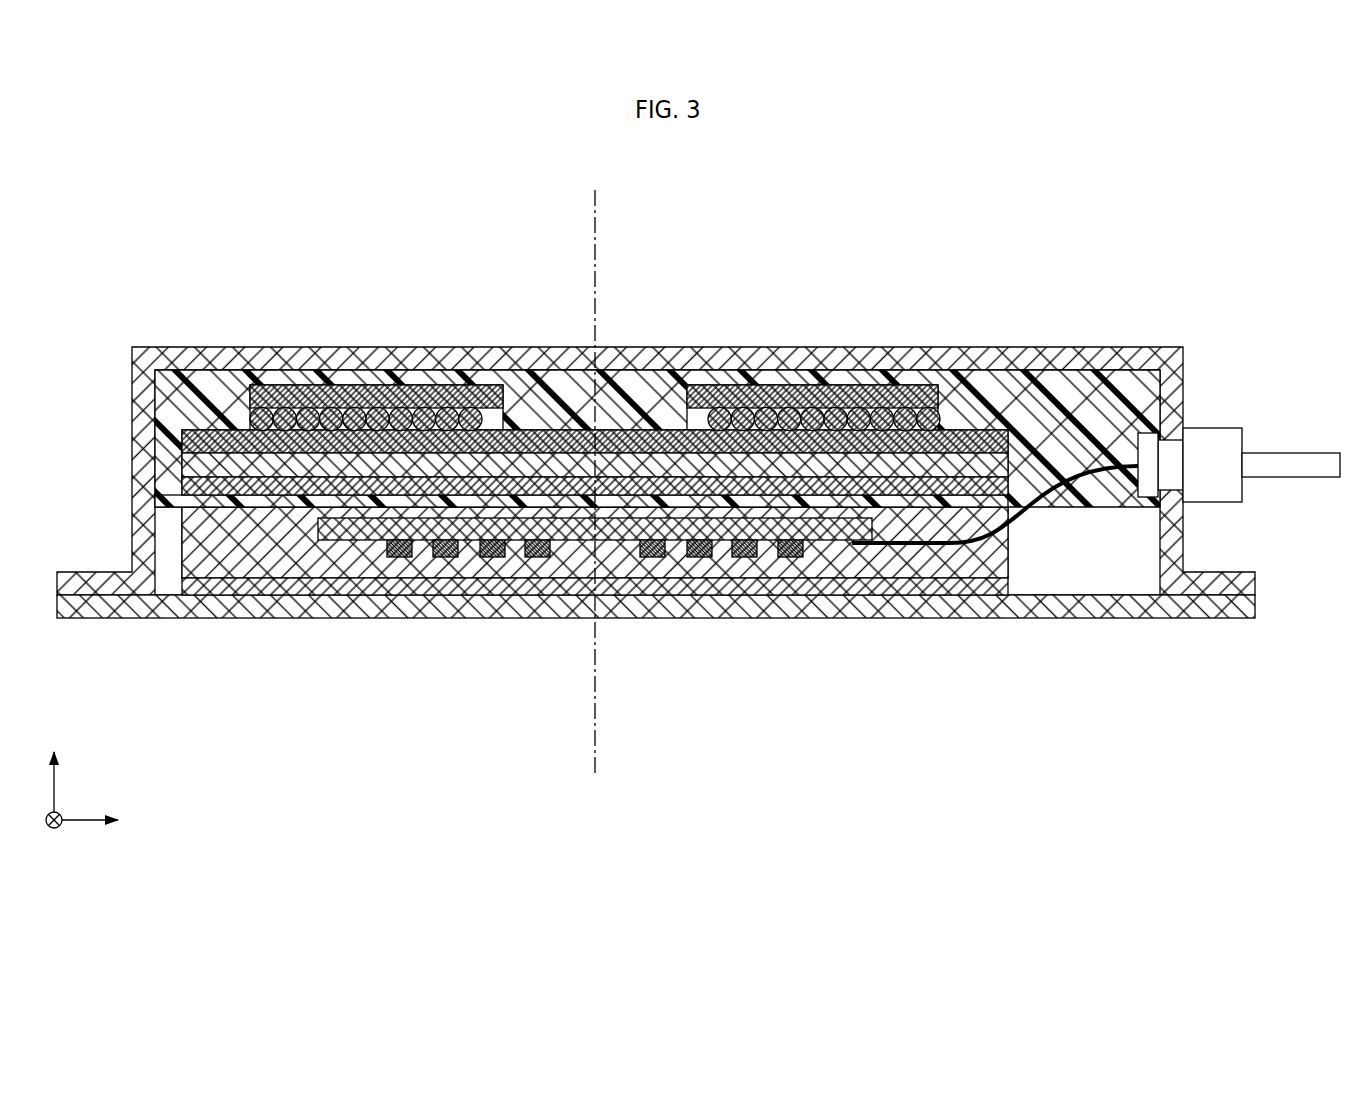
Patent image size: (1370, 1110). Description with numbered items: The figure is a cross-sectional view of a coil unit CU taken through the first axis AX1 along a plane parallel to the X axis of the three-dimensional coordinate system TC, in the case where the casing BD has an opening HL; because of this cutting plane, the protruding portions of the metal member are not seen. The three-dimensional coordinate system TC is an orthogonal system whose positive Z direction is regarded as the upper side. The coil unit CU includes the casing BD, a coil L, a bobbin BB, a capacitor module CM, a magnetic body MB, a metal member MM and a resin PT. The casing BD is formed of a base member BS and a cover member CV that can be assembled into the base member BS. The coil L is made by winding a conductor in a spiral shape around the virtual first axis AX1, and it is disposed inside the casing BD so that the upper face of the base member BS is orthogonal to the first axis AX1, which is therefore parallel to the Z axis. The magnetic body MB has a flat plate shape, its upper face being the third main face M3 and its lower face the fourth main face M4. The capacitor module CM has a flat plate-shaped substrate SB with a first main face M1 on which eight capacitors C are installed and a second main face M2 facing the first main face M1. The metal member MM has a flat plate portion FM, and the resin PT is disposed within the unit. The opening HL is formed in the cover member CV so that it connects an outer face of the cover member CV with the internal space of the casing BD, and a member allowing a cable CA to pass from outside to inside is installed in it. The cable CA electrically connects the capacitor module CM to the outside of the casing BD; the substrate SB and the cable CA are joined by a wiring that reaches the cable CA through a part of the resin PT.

The coil unit CU is at (816, 265).
The casing BD is at (687, 512).
The cover member CV is at (977, 347).
The base member BS is at (480, 617).
The resin PT is at (220, 347).
The coil L is at (333, 347).
The bobbin BB is at (835, 393).
The second main face M2 is at (515, 512).
The third main face M3 is at (205, 447).
The magnetic body MB is at (640, 455).
The fourth main face M4 is at (202, 483).
The first main face M1 is at (335, 547).
The capacitor module CM is at (616, 617).
The substrate SB is at (850, 545).
The capacitors C is at (400, 557).
The flat plate portion FM is at (995, 403).
The metal member MM is at (965, 483).
The opening HL is at (1175, 475).
The cable CA is at (1258, 458).
The first axis AX1 is at (597, 218).
The three-dimensional coordinate system TC is at (67, 808).